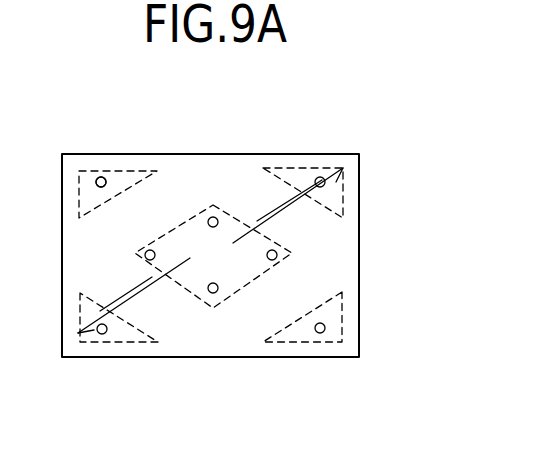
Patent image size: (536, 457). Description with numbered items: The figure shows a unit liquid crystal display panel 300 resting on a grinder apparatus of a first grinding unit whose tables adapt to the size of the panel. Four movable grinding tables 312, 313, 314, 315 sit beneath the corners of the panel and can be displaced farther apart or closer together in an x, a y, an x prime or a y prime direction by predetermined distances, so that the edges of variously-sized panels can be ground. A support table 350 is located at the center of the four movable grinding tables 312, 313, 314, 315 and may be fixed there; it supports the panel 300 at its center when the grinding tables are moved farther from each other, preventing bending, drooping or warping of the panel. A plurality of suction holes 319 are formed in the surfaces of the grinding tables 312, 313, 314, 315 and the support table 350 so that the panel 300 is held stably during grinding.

The unit liquid crystal display panel 300 is at (207, 357).
The movable grinding table 312 is at (93, 168).
The movable grinding table 313 is at (292, 168).
The movable grinding table 314 is at (100, 345).
The movable grinding table 315 is at (327, 343).
The suction hole 319 is at (212, 216).
The support table 350 is at (248, 282).